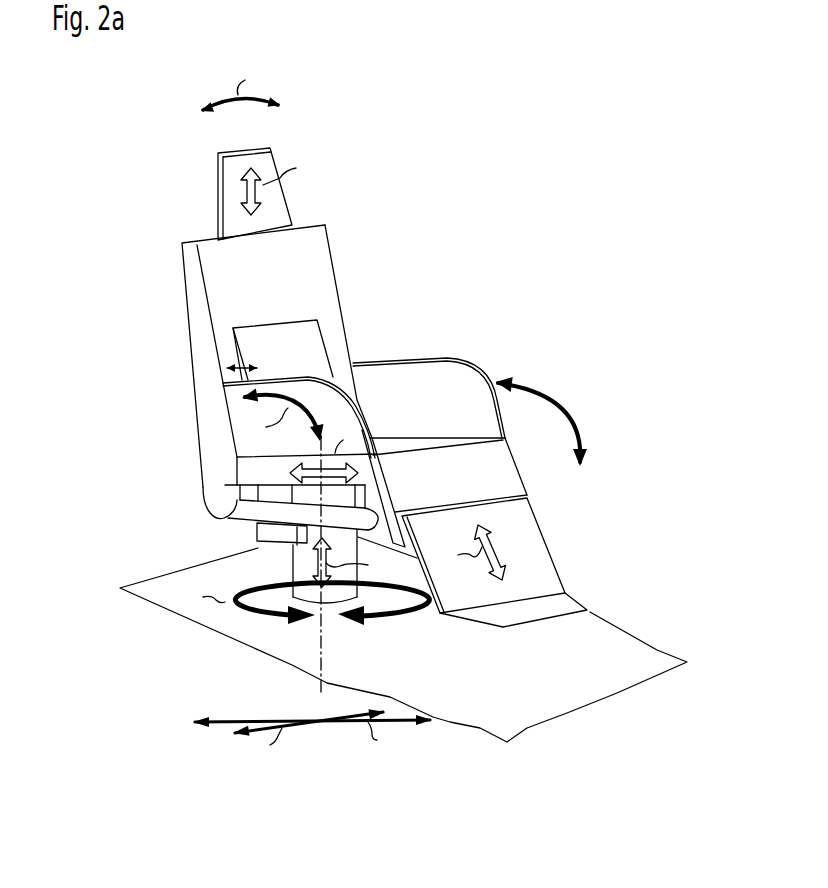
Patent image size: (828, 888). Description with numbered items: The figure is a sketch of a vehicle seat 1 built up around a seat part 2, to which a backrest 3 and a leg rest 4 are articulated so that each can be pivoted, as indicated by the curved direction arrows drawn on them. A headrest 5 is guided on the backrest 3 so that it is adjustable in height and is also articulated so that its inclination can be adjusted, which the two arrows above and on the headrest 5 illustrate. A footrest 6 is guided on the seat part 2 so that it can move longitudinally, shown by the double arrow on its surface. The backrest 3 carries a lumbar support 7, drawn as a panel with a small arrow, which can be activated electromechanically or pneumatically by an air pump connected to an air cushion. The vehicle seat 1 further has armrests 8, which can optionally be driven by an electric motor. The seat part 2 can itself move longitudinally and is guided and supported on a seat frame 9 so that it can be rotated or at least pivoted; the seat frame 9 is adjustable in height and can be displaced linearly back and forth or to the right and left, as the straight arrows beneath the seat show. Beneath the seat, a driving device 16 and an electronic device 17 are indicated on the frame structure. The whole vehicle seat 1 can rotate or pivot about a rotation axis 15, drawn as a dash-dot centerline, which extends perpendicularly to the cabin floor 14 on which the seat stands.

The vehicle seat 1 is at (486, 163).
The seat part 2 is at (263, 473).
The backrest 3 is at (228, 285).
The leg rest 4 is at (472, 483).
The headrest 5 is at (235, 195).
The footrest 6 is at (513, 552).
The lumbar support 7 is at (262, 357).
The armrest 8 is at (493, 378).
The seat frame 9 is at (290, 555).
The cabin floor 14 is at (467, 673).
The rotation axis 15 is at (320, 660).
The driving device 16 is at (268, 515).
The electronic device 17 is at (273, 530).